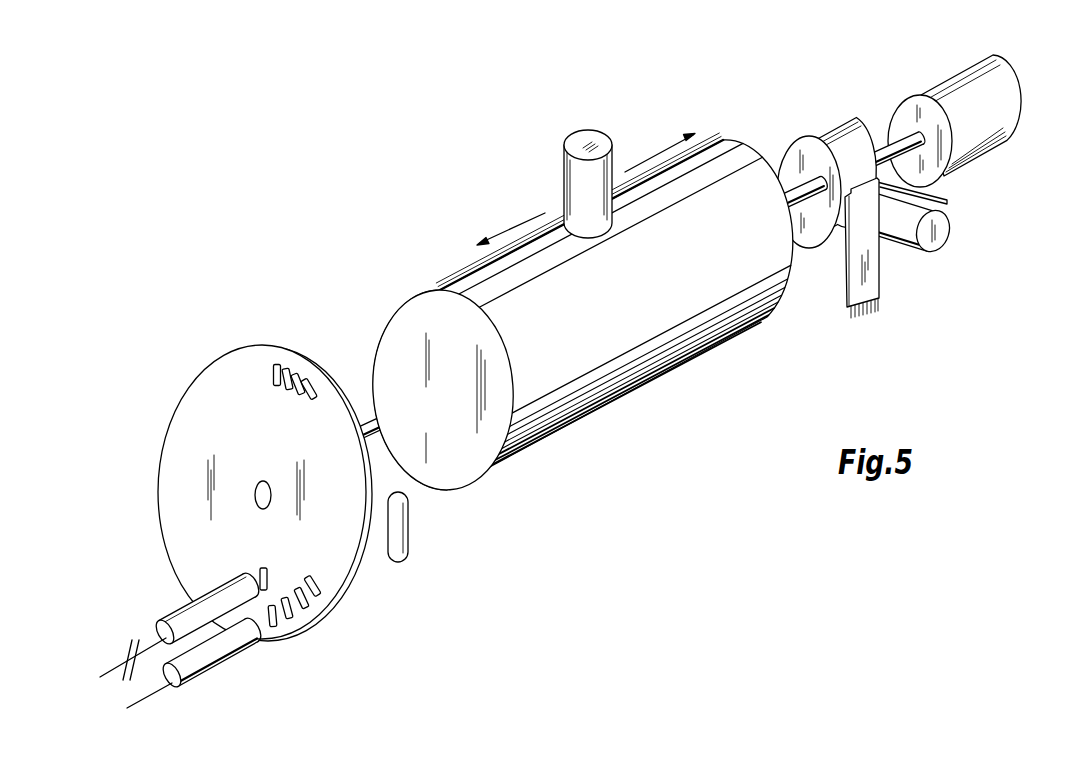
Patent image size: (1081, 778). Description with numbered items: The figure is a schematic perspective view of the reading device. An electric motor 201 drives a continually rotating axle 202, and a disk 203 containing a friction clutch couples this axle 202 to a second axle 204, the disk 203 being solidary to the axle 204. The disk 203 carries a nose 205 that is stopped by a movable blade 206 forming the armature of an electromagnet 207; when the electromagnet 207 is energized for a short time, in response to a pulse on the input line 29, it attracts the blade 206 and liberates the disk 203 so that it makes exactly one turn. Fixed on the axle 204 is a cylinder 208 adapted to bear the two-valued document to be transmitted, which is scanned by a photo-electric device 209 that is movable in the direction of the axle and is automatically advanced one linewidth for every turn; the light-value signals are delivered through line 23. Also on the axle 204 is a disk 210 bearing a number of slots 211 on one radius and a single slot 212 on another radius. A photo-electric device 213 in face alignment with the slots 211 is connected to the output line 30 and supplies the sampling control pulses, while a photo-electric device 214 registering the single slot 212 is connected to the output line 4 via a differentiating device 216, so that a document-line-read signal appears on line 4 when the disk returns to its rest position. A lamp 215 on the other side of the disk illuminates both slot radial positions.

The electric motor 201 is at (1003, 143).
The axle 202 is at (880, 150).
The disk 203 is at (815, 137).
The axle 204 is at (800, 188).
The nose 205 is at (930, 196).
The movable blade 206 is at (846, 272).
The electromagnet 207 is at (915, 249).
The line 29 is at (940, 247).
The cylinder 208 is at (670, 378).
The photo-electric device 209 is at (600, 128).
The line 23 is at (578, 143).
The disk 210 is at (190, 383).
The slots 211 is at (312, 607).
The single slot 212 is at (266, 568).
The photo-electric device 213 is at (220, 663).
The photo-electric device 214 is at (170, 613).
The lamp 215 is at (408, 556).
The differentiating device 216 is at (125, 657).
The line 4 is at (124, 667).
The line 30 is at (134, 708).